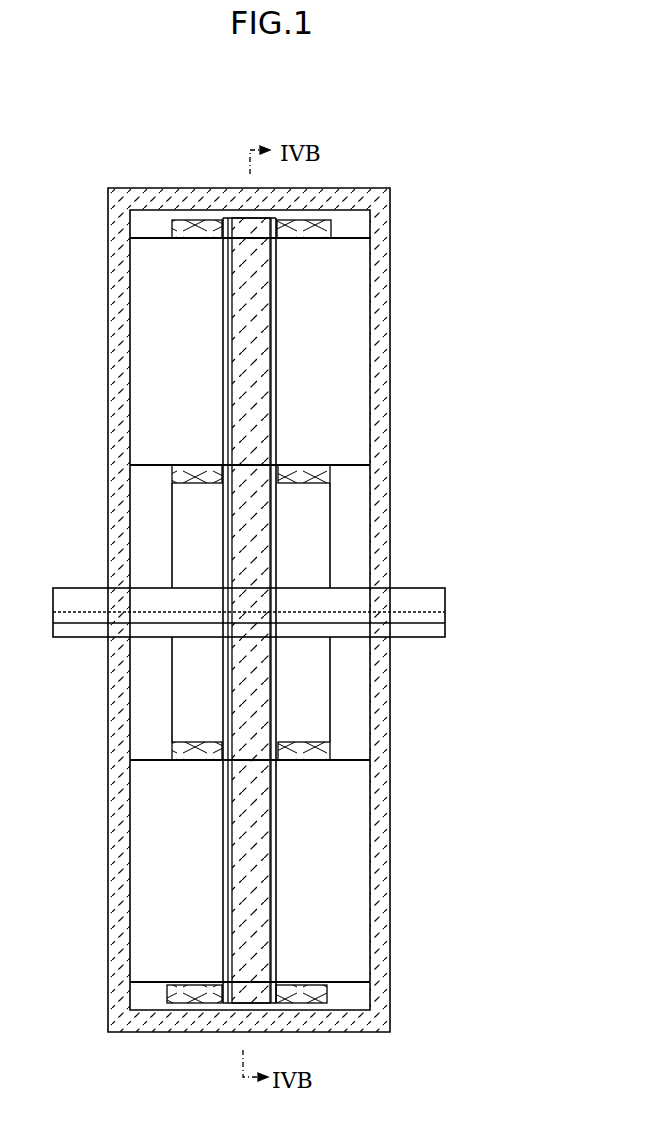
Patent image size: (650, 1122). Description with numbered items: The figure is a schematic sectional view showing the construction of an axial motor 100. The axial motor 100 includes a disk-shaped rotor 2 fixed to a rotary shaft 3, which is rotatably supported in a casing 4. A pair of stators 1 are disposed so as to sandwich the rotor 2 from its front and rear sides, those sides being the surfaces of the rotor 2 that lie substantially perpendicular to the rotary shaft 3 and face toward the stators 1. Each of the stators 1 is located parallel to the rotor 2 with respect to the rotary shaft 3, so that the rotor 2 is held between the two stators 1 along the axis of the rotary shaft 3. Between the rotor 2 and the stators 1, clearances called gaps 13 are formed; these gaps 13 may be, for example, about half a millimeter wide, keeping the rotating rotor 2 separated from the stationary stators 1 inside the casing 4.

The axial motor 100 is at (278, 573).
The casing 4 is at (188, 199).
The gaps 13 is at (225, 273).
The stators 1 is at (190, 955).
The rotor 2 is at (257, 860).
The rotary shaft 3 is at (435, 593).